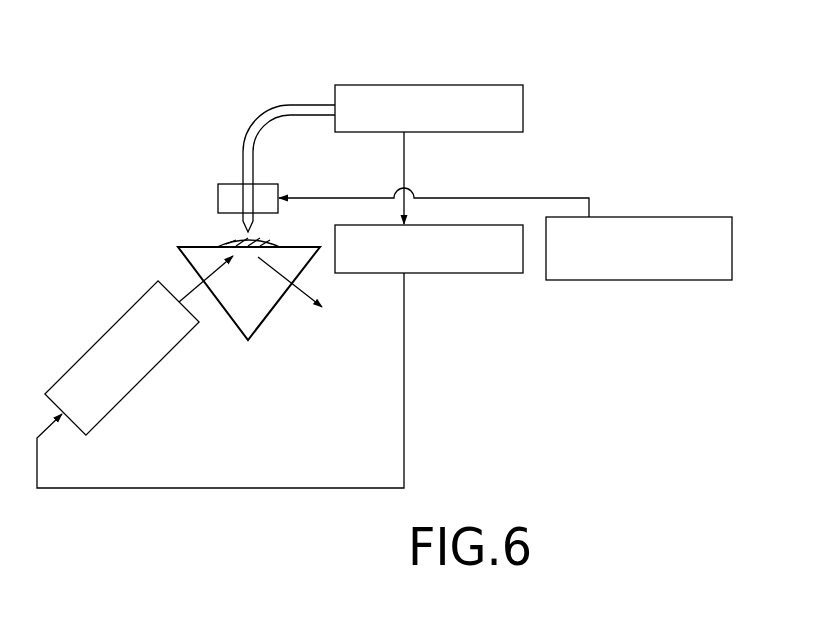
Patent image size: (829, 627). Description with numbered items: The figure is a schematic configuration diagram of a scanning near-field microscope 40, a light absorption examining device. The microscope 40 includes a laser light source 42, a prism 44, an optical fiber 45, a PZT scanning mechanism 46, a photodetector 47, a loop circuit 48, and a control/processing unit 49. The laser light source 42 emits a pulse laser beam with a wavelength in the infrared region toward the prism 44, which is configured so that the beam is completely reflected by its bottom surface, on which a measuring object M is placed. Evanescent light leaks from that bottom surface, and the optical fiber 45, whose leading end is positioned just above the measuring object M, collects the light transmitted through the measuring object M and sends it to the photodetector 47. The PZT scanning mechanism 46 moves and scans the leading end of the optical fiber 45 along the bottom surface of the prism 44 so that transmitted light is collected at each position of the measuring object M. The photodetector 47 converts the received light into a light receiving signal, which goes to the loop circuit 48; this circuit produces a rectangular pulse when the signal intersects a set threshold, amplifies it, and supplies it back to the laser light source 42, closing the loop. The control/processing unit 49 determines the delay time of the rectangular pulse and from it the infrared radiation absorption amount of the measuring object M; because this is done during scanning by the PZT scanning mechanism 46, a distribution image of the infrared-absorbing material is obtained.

The scanning near-field microscope 40 is at (137, 117).
The laser light source 42 is at (107, 330).
The prism 44 is at (257, 315).
The optical fiber 45 is at (242, 156).
The PZT scanning mechanism 46 is at (217, 198).
The photodetector 47 is at (415, 84).
The loop circuit 48 is at (444, 274).
The control/processing unit 49 is at (596, 281).
The measuring object M is at (226, 239).